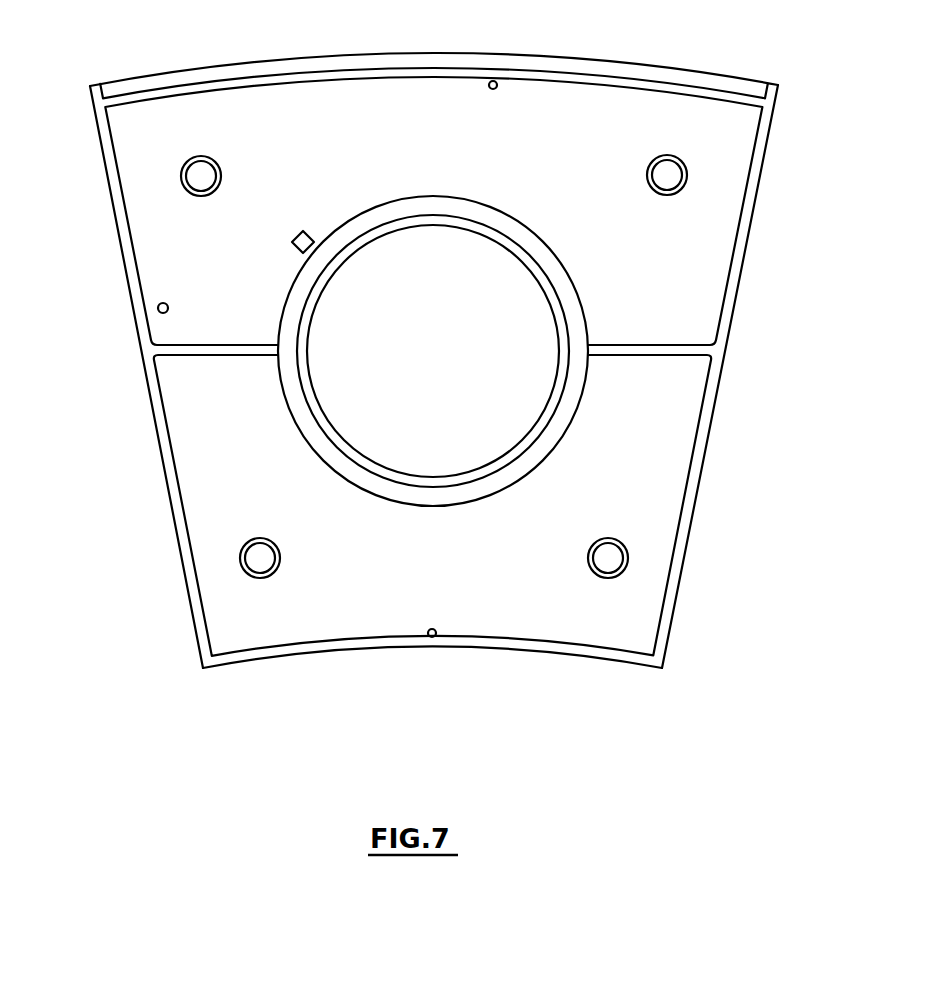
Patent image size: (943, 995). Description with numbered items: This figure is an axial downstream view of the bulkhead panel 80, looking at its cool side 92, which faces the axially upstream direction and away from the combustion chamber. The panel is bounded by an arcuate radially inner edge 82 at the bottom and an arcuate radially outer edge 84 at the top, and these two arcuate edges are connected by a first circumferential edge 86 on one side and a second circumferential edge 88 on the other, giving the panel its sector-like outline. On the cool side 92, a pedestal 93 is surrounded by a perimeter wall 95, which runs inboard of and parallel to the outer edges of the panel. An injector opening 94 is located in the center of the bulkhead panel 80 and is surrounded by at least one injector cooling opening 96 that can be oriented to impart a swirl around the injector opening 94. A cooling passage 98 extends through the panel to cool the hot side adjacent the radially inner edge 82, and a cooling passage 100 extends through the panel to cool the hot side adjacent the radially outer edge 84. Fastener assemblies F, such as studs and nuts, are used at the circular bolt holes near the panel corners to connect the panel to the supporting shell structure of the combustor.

The bulkhead panel 80 is at (160, 692).
The radially inner edge 82 is at (538, 656).
The radially outer edge 84 is at (432, 379).
The first circumferential edge 86 is at (722, 367).
The second circumferential edge 88 is at (150, 402).
The cool side 92 is at (731, 120).
The pedestal 93 is at (158, 308).
The injector opening 94 is at (480, 335).
The perimeter wall 95 is at (270, 84).
The injector cooling opening 96 is at (297, 233).
The cooling passage 98 is at (435, 638).
The cooling passage 100 is at (494, 81).
The fastener assembly F is at (613, 558).